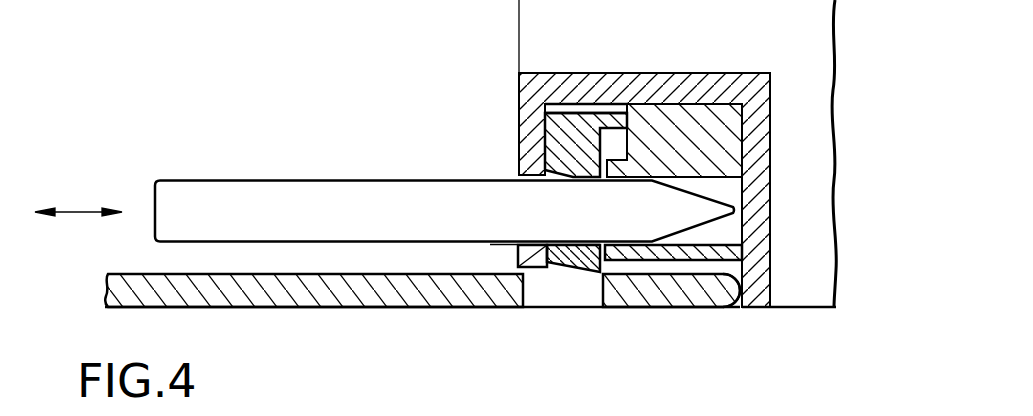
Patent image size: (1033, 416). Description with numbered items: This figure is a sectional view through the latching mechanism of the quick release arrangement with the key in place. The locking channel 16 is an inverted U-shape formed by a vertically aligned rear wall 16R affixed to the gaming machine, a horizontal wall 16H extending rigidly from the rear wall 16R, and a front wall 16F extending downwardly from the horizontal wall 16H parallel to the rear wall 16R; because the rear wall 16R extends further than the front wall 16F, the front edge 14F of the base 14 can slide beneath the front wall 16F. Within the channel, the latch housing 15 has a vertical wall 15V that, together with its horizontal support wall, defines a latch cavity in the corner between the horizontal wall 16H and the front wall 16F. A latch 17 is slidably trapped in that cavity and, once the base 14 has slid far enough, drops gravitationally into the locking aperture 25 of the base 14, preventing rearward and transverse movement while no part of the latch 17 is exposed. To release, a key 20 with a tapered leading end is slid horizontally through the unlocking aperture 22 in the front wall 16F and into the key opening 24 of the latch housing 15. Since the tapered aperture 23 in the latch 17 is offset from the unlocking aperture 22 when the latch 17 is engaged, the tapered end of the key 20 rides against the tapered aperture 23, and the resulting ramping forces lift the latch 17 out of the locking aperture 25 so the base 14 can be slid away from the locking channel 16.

The base 14 is at (308, 303).
The front edge 14F is at (738, 292).
The latch housing 15 is at (712, 113).
The vertical wall 15V is at (772, 104).
The locking channel 16 is at (562, 77).
The front wall 16F is at (519, 143).
The horizontal wall 16H is at (628, 73).
The rear wall 16R is at (772, 153).
The latch 17 is at (547, 120).
The key 20 is at (267, 180).
The unlocking aperture 22 is at (530, 243).
The tapered aperture 23 is at (592, 240).
The key opening 24 is at (735, 178).
The locking aperture 25 is at (578, 303).